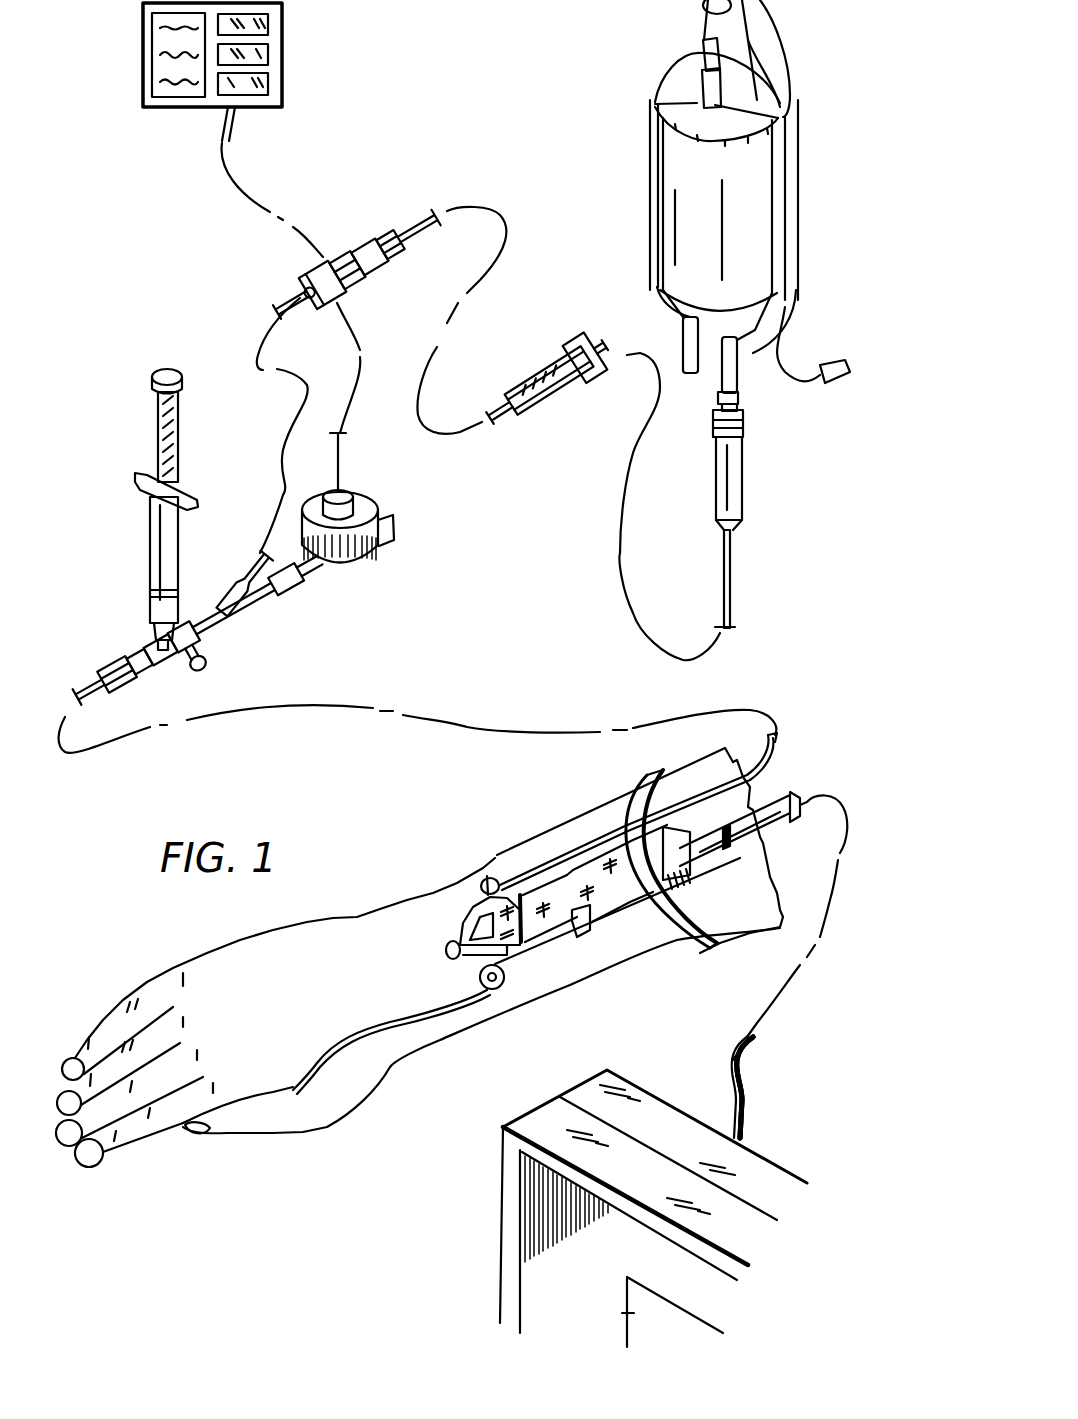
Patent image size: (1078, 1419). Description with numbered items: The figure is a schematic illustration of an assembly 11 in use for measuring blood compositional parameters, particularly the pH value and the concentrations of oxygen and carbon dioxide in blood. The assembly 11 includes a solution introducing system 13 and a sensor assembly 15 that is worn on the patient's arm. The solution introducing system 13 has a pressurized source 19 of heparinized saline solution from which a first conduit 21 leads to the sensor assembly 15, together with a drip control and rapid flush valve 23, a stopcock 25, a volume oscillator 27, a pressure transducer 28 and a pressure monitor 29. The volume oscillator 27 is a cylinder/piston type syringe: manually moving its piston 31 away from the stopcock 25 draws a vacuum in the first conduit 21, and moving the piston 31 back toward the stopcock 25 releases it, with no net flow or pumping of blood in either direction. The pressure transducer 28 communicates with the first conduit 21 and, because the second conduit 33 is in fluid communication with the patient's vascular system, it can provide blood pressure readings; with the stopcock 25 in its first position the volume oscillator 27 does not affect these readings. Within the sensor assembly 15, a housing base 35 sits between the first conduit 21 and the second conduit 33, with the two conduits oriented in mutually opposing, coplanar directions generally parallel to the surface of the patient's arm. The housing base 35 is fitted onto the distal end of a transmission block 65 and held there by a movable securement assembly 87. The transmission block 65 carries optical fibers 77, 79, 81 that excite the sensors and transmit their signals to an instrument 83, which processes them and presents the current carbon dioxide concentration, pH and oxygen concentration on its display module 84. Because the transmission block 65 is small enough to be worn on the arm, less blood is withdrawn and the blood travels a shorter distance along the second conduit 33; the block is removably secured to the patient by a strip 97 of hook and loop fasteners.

The assembly 11 is at (122, 635).
The solution introducing system 13 is at (567, 470).
The sensor assembly 15 is at (571, 968).
The pressurized source 19 is at (660, 200).
The first conduit 21 is at (728, 567).
The drip control and rapid flush valve 23 is at (367, 228).
The stopcock 25 is at (178, 670).
The volume oscillator 27 is at (153, 532).
The pressure transducer 28 is at (370, 563).
The pressure monitor 29 is at (143, 107).
The piston 31 is at (157, 417).
The second conduit 33 is at (400, 1025).
The housing base 35 is at (490, 878).
The transmission block 65 is at (604, 890).
The optical fiber 77 is at (742, 1090).
The optical fiber 79 is at (781, 1087).
The optical fiber 81 is at (794, 1087).
The instrument 83 is at (510, 1183).
The display module 84 is at (627, 1313).
The securement assembly 87 is at (481, 886).
The strip 97 is at (710, 942).